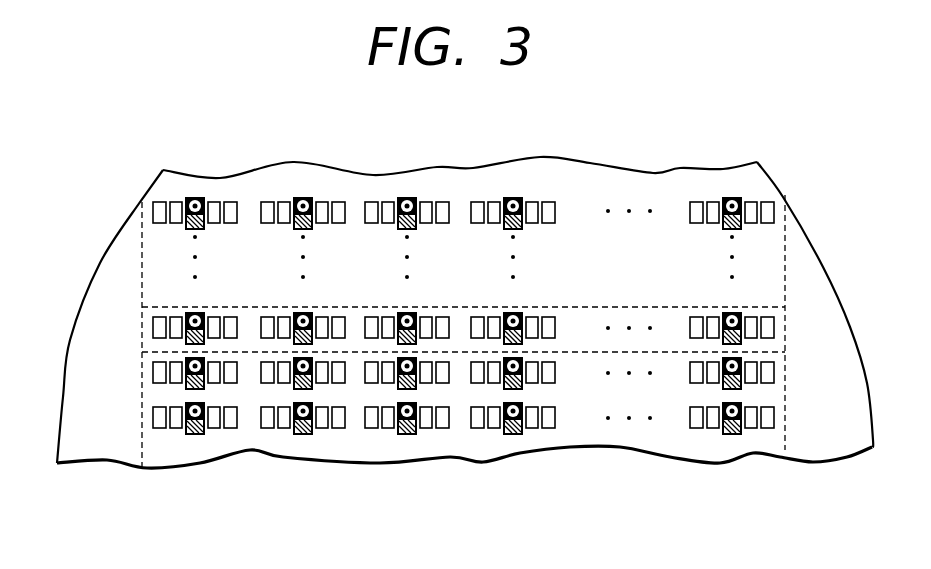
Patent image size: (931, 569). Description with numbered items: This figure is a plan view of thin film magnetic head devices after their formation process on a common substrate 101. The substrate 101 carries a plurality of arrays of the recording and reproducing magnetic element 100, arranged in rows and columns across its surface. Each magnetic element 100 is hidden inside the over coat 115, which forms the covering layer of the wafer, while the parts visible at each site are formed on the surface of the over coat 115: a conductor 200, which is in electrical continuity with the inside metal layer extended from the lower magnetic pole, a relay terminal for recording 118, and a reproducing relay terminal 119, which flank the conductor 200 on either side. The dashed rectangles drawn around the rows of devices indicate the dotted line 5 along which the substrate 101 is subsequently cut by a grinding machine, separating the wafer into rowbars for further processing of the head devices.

The recording and reproducing magnetic element 100 is at (729, 193).
The dotted line 5 is at (655, 307).
The substrate 101 is at (140, 470).
The reproducing relay terminal 119 is at (338, 431).
The relay terminal for recording 118 is at (373, 431).
The conductor 200 is at (517, 436).
The over coat 115 is at (648, 443).